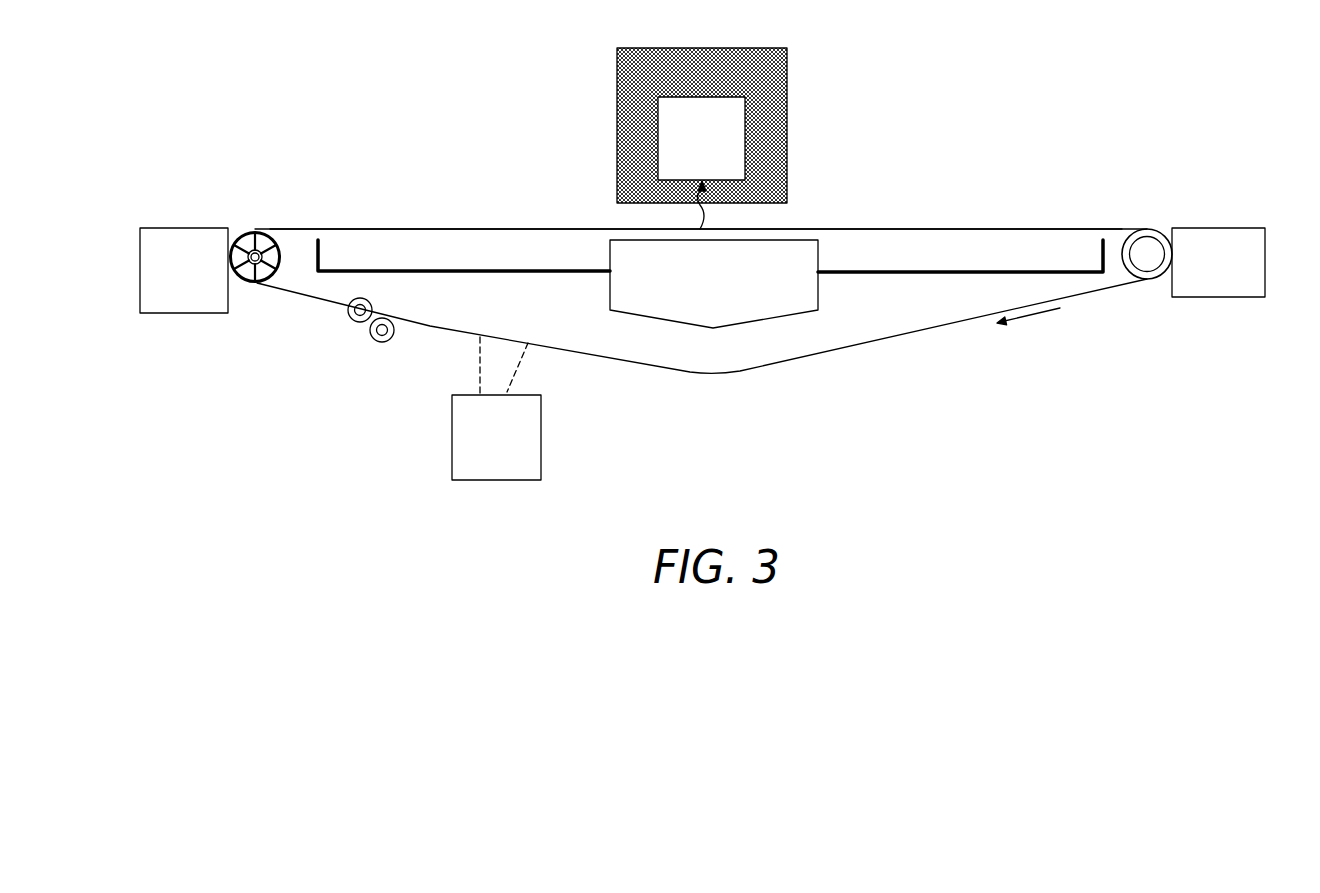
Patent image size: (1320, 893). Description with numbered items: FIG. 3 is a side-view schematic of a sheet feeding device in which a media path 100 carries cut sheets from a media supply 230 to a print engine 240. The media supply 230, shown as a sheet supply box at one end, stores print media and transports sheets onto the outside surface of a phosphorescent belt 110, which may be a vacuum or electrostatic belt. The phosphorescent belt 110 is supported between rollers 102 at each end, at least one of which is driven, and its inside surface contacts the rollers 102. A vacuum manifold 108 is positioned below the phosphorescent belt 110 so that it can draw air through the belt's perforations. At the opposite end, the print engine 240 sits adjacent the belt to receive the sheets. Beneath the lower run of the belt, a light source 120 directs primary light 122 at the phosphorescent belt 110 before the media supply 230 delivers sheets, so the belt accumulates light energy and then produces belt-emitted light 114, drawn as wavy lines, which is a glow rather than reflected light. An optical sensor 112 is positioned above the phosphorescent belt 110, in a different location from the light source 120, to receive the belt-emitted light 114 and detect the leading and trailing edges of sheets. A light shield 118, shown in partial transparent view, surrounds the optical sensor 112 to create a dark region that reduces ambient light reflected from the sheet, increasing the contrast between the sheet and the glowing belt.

The media path 100 is at (988, 149).
The rollers 102 is at (253, 232).
The vacuum manifold 108 is at (731, 294).
The phosphorescent belt 110 is at (347, 228).
The optical sensor 112 is at (723, 97).
The belt-emitted light 114 is at (295, 228).
The light shield 118 is at (787, 103).
The light source 120 is at (497, 480).
The primary light 122 is at (518, 368).
The media supply 230 is at (180, 315).
The print engine 240 is at (1216, 298).